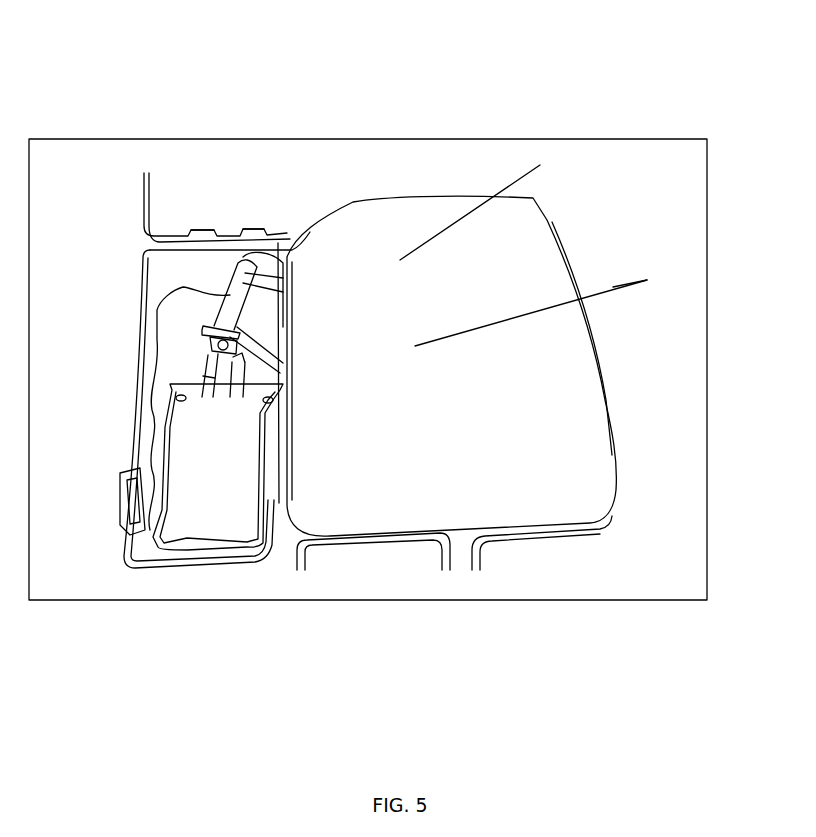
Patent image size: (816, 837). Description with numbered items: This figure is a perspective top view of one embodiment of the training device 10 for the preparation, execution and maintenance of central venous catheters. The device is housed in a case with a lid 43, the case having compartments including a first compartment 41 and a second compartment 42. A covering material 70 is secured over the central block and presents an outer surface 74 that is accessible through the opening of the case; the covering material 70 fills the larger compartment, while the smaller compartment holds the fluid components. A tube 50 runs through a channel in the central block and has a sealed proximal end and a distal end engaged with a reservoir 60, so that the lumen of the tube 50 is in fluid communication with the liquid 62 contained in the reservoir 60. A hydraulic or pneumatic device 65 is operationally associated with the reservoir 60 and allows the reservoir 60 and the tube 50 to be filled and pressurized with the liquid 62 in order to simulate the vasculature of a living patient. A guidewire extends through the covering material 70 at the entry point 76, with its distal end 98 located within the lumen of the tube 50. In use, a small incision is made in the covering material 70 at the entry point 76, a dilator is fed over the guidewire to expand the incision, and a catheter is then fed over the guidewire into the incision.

The training device 10 is at (129, 78).
The lid 43 is at (217, 182).
The tube 50 is at (281, 240).
The hydraulic or pneumatic device 65 is at (197, 293).
The second compartment 42 is at (205, 327).
The liquid 62 is at (213, 443).
The reservoir 60 is at (210, 503).
The covering material 70 is at (520, 372).
The first compartment 41 is at (513, 420).
The entry point 76 is at (400, 260).
The distal end of guidewire 98 is at (505, 189).
The outer surface of covering material 74 is at (355, 503).